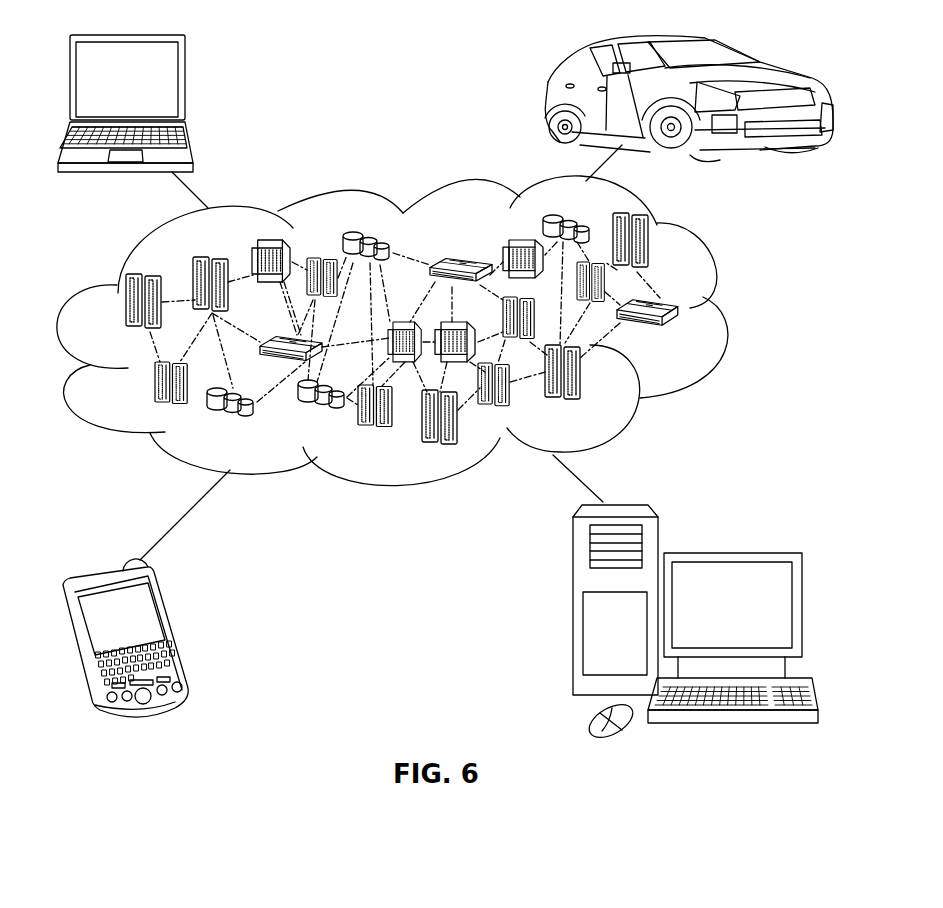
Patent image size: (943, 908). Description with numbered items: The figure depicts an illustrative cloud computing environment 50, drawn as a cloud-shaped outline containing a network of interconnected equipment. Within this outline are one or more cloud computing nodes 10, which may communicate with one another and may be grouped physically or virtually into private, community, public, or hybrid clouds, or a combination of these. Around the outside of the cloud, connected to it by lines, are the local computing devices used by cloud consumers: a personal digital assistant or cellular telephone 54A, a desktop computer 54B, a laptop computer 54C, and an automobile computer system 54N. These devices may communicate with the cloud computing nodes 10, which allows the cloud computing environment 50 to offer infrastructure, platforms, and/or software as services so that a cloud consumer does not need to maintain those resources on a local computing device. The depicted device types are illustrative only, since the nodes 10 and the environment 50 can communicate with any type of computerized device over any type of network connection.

The cloud computing node 10 is at (681, 337).
The cloud computing environment 50 is at (732, 313).
The personal digital assistant or cellular telephone 54A is at (178, 632).
The desktop computer 54B is at (731, 552).
The laptop computer 54C is at (186, 85).
The automobile computer system 54N is at (546, 97).